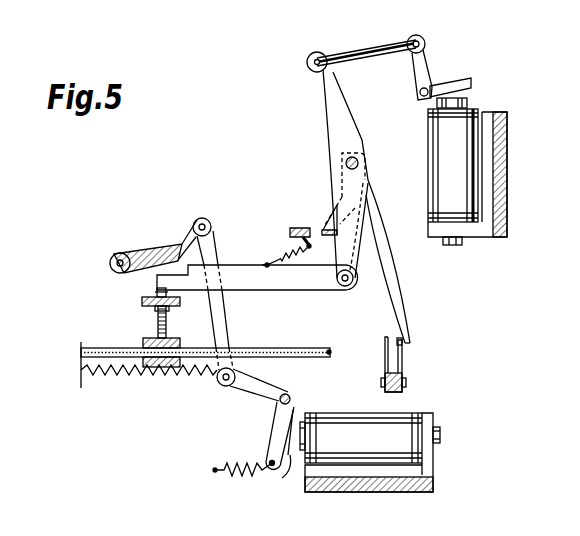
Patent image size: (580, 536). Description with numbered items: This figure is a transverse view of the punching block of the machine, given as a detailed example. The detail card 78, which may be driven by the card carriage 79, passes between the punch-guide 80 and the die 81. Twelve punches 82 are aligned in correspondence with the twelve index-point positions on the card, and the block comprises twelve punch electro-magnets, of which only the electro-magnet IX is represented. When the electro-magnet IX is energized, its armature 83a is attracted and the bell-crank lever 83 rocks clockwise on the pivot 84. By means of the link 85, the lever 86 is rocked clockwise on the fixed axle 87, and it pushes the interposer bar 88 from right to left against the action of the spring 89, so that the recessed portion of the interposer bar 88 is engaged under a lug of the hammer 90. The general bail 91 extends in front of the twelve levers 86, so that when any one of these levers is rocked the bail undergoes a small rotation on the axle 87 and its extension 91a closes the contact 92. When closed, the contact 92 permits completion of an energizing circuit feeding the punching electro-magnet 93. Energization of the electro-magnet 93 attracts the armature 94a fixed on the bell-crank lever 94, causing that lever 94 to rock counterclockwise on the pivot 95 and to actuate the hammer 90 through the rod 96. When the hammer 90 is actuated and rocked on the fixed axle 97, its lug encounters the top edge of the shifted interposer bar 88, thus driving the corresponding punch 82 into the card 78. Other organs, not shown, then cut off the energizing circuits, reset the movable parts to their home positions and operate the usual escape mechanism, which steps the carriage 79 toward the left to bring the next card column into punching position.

The detail card 78 is at (262, 356).
The card carriage 79 is at (333, 355).
The punch-guide 80 is at (151, 338).
The die 81 is at (140, 376).
The punch 82 is at (157, 292).
The bell-crank lever 83 is at (431, 64).
The armature 83a is at (470, 73).
The pivot 84 is at (419, 93).
The link 85 is at (375, 45).
The lever 86 is at (349, 118).
The fixed axle 87 is at (360, 161).
The interposer bar 88 is at (243, 265).
The spring 89 is at (282, 252).
The hammer 90 is at (198, 222).
The general bail 91 is at (325, 227).
The extension 91a is at (409, 332).
The contact 92 is at (402, 358).
The punching electro-magnet 93 is at (413, 413).
The bell-crank lever 94 is at (270, 436).
The armature 94a is at (283, 478).
The pivot 95 is at (291, 398).
The rod 96 is at (237, 330).
The fixed axle 97 is at (119, 260).
The electro-magnet IX is at (476, 110).